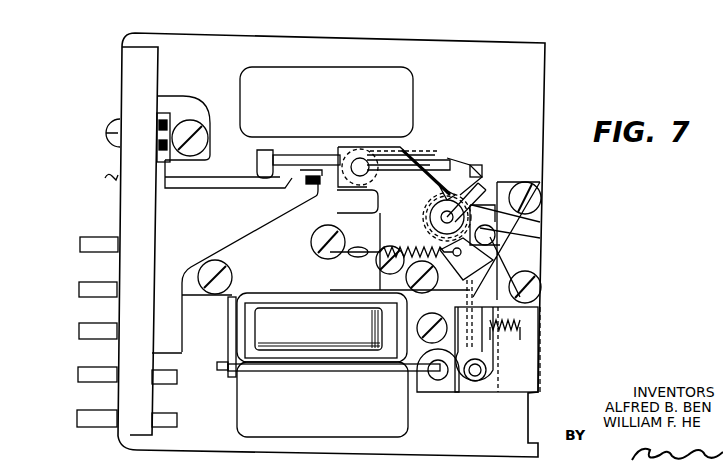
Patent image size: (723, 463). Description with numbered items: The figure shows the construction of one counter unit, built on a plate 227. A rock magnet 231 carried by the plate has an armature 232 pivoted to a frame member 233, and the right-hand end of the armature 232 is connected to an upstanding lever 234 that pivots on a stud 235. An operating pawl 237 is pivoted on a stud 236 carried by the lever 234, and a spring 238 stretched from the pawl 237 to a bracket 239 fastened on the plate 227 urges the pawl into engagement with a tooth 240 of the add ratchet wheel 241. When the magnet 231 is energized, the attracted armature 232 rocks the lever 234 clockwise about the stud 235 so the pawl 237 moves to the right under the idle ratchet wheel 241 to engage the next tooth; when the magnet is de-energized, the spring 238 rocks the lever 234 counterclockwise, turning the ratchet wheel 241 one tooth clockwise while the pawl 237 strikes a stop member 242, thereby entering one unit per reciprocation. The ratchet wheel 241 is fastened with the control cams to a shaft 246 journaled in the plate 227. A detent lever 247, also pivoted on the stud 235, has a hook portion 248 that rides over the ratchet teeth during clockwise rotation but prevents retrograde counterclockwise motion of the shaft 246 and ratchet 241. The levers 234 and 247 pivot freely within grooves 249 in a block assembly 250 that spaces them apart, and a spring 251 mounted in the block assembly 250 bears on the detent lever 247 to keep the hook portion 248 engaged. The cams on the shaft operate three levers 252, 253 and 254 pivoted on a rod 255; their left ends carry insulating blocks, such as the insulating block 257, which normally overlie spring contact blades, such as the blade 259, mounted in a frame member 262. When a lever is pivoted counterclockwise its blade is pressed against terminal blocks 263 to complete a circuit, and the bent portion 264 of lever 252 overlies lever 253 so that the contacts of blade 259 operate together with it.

The plate 227 is at (527, 68).
The rock magnet 231 is at (278, 341).
The armature 232 is at (363, 367).
The frame member 233 is at (232, 335).
The upstanding lever 234 is at (432, 385).
The stud 235 is at (478, 375).
The stud 236 is at (490, 240).
The operating pawl 237 is at (538, 263).
The spring 238 is at (382, 258).
The bracket 239 is at (316, 228).
The tooth 240 is at (430, 224).
The add ratchet wheel 241 is at (428, 213).
The stop member 242 is at (455, 283).
The shaft 246 is at (480, 190).
The detent lever 247 is at (537, 236).
The hook portion 248 is at (537, 221).
The grooves 249 is at (470, 347).
The block assembly 250 is at (530, 324).
The spring 251 is at (525, 333).
The lever 252 is at (426, 160).
The lever 253 is at (462, 170).
The lever 254 is at (440, 187).
The rod 255 is at (362, 160).
The insulating block 257 is at (256, 164).
The spring contact blade 259 is at (220, 180).
The frame member 262 is at (128, 222).
The terminal blocks 263 is at (318, 188).
The bent portion 264 is at (447, 160).